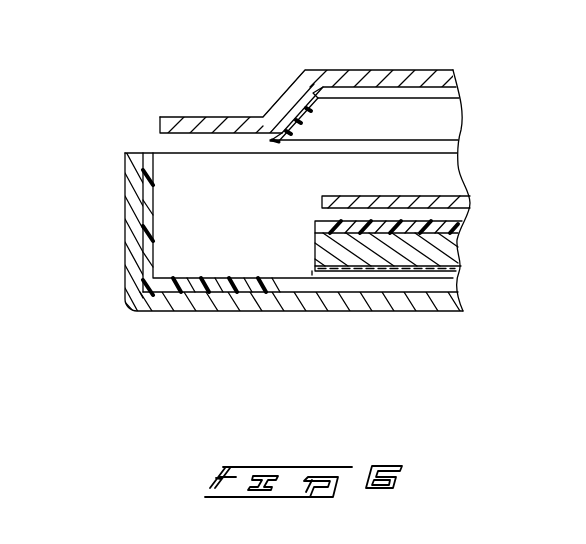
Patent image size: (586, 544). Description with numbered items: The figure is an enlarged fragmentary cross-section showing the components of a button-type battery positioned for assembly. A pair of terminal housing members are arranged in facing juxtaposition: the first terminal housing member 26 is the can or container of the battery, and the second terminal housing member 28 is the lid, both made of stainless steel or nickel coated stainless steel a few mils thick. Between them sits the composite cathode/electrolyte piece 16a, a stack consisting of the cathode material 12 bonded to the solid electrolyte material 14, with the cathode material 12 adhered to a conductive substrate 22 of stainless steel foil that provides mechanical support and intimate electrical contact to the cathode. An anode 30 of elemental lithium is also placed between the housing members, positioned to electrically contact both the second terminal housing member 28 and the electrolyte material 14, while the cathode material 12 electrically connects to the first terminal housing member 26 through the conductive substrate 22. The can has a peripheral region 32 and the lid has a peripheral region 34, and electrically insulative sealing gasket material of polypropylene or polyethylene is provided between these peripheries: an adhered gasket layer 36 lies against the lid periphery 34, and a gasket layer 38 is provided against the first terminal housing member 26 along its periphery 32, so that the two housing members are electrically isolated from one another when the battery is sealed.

The cathode material 12 is at (450, 253).
The solid electrolyte material 14 is at (462, 228).
The composite cathode/electrolyte piece 16a is at (311, 271).
The conductive substrate 22 is at (455, 277).
The first terminal housing member 26 is at (215, 312).
The second terminal housing member 28 is at (273, 113).
The anode 30 is at (465, 202).
The peripheral region of first terminal housing member 32 is at (98, 315).
The peripheral region of second terminal housing member 34 is at (205, 83).
The gasket layer 36 is at (297, 113).
The gasket layer 38 is at (210, 285).